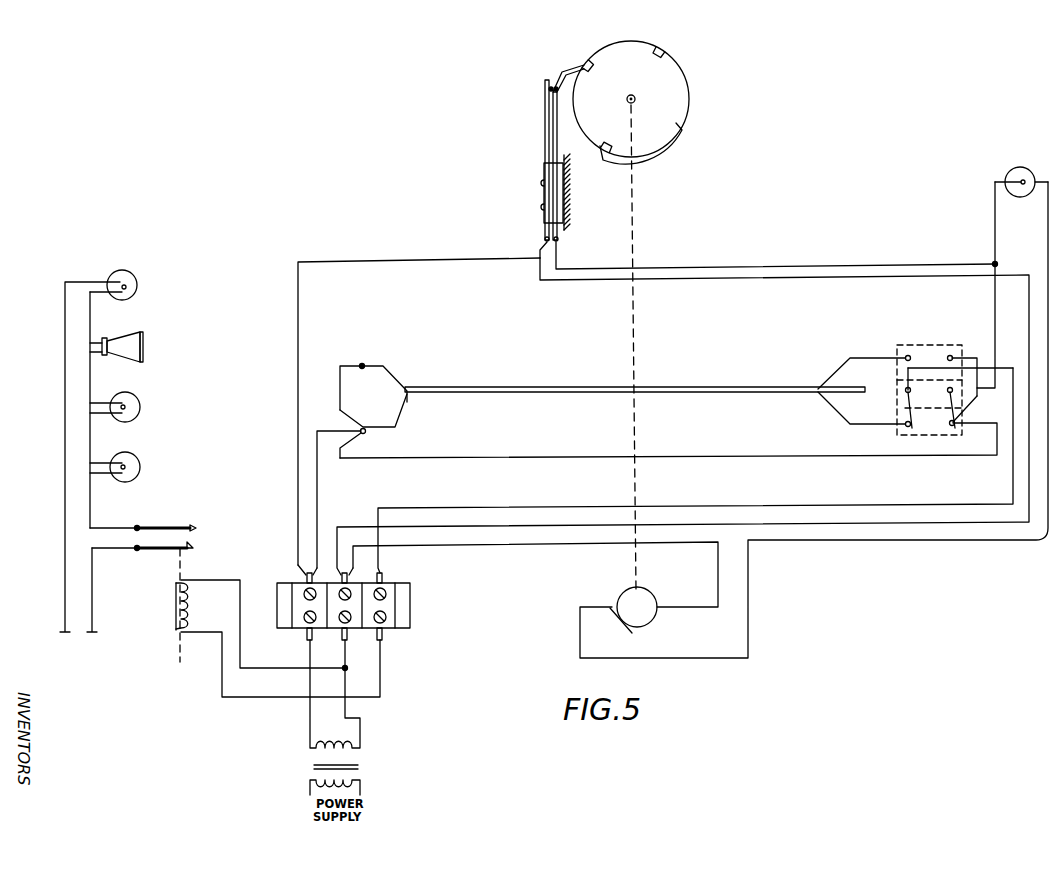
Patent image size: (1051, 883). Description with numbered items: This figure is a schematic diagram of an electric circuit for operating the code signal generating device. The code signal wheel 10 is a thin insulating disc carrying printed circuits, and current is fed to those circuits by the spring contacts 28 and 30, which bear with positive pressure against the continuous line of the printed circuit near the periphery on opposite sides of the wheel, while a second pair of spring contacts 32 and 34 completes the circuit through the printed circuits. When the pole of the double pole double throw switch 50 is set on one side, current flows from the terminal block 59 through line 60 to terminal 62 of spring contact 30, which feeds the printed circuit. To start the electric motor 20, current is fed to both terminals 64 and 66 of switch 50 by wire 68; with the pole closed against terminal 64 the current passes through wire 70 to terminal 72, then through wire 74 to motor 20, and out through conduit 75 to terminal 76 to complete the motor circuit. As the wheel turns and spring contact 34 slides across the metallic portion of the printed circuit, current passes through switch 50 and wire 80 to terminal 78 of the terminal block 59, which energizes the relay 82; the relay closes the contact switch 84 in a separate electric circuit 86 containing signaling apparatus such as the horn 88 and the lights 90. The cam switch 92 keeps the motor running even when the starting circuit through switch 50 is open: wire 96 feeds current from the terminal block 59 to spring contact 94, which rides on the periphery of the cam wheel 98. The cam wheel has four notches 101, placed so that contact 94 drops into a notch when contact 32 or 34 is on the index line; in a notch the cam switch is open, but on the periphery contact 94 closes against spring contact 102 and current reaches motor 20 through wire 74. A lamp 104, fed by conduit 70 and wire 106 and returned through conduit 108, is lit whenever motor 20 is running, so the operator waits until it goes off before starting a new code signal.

The code signal wheel 10 is at (590, 388).
The electric motor 20 is at (648, 598).
The spring contact 28 is at (388, 366).
The spring contact 30 is at (398, 425).
The spring contact 32 is at (840, 366).
The spring contact 34 is at (840, 419).
The double pole double throw switch 50 is at (913, 338).
The terminal block 59 is at (411, 610).
The line 60 is at (317, 505).
The terminal 62 is at (366, 437).
The terminal 64 is at (956, 435).
The terminal 66 is at (951, 347).
The wire 68 is at (566, 457).
The wire 70 is at (784, 265).
The terminal 72 is at (546, 240).
The wire 74 is at (722, 281).
The conduit 75 is at (565, 546).
The terminal 76 is at (347, 573).
The terminal 78 is at (383, 575).
The wire 80 is at (566, 507).
The relay 82 is at (176, 608).
The contact switch 84 is at (195, 547).
The electric circuit 86 is at (65, 485).
The horn 88 is at (143, 346).
The lights 90 is at (137, 285).
The cam switch 92 is at (556, 61).
The spring contact 94 is at (558, 141).
The wire 96 is at (298, 437).
The cam wheel 98 is at (668, 80).
The notches 101 is at (584, 63).
The spring contact 102 is at (545, 125).
The lamp 104 is at (1022, 168).
The wire 106 is at (995, 221).
The conduit 108 is at (1035, 528).